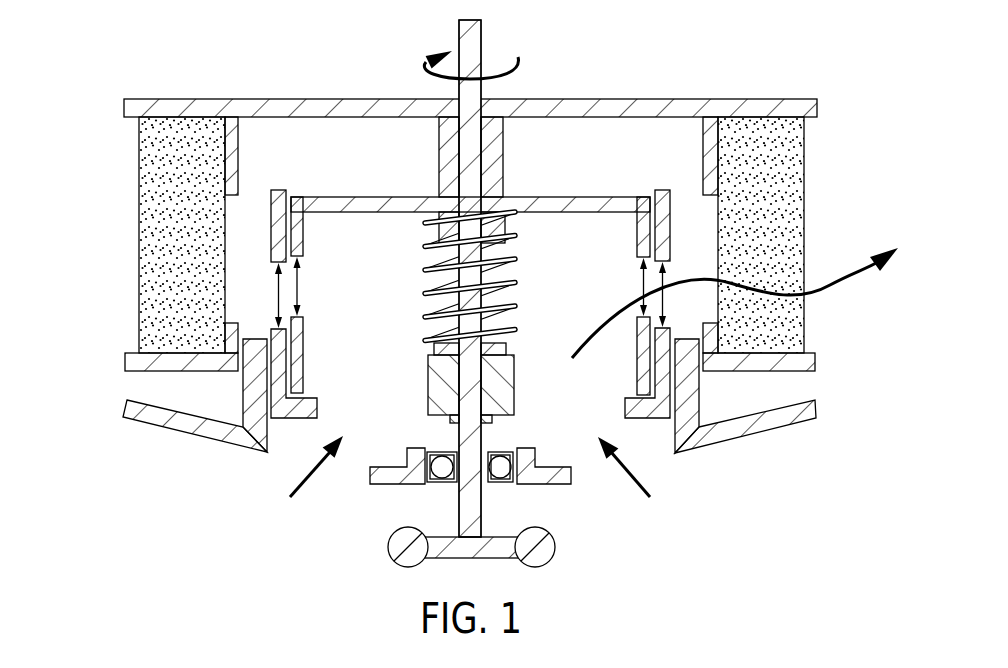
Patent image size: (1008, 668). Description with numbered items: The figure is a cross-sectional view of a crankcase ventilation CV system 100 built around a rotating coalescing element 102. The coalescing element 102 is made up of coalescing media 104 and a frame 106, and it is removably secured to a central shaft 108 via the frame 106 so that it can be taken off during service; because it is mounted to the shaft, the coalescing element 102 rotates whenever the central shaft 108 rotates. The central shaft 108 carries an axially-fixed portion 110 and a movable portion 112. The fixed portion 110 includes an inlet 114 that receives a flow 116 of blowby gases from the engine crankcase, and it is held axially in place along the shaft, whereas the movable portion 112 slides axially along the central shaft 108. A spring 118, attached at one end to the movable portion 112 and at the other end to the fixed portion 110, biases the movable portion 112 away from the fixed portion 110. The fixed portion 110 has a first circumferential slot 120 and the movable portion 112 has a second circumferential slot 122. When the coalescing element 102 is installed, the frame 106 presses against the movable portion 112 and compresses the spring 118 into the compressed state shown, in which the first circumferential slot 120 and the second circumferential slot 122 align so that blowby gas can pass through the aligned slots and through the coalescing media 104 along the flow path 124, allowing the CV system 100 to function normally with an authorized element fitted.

The CV system 100 is at (102, 58).
The rotating coalescing element 102 is at (92, 98).
The coalescing media 104 is at (158, 185).
The frame 106 is at (752, 105).
The central shaft 108 is at (473, 52).
The axially-fixed portion 110 is at (665, 388).
The movable portion 112 is at (555, 197).
The inlet 114 is at (588, 415).
The flow of blowby gases 116 is at (641, 497).
The spring 118 is at (508, 283).
The first circumferential slot 120 is at (277, 295).
The second circumferential slot 122 is at (298, 285).
The flow path 124 is at (843, 292).